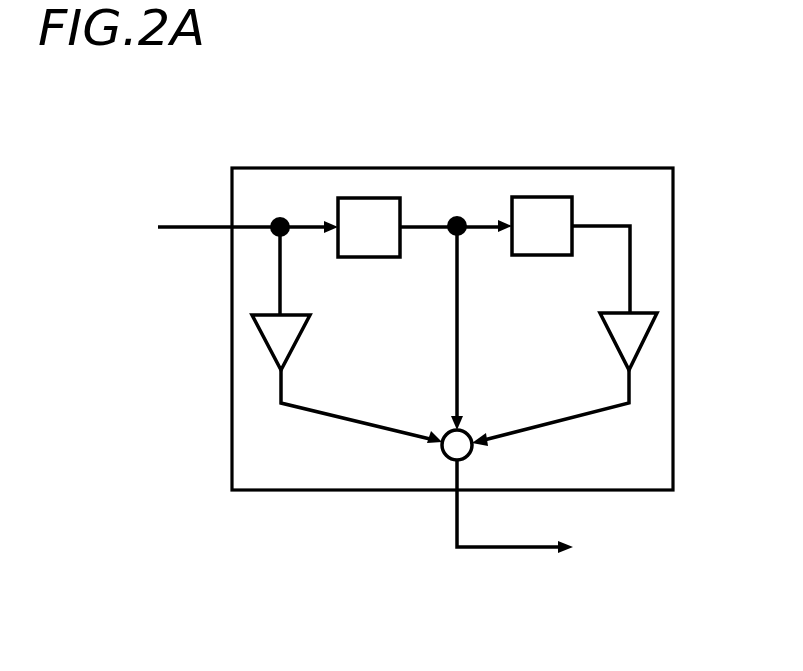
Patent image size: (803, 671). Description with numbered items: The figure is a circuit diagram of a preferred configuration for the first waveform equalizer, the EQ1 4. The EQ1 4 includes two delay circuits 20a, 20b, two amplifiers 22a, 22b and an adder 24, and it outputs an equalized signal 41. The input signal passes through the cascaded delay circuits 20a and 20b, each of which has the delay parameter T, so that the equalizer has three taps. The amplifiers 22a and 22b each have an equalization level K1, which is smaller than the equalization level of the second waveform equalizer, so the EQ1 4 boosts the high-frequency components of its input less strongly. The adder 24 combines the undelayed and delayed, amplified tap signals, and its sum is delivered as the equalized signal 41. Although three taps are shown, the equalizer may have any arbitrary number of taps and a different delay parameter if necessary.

The first waveform equalizer (EQ1) 4 is at (627, 168).
The delay circuit 20a is at (382, 198).
The delay circuit 20b is at (542, 197).
The amplifier 22a is at (262, 347).
The amplifier 22b is at (647, 344).
The adder 24 is at (450, 460).
The equalized signal 41 is at (513, 547).